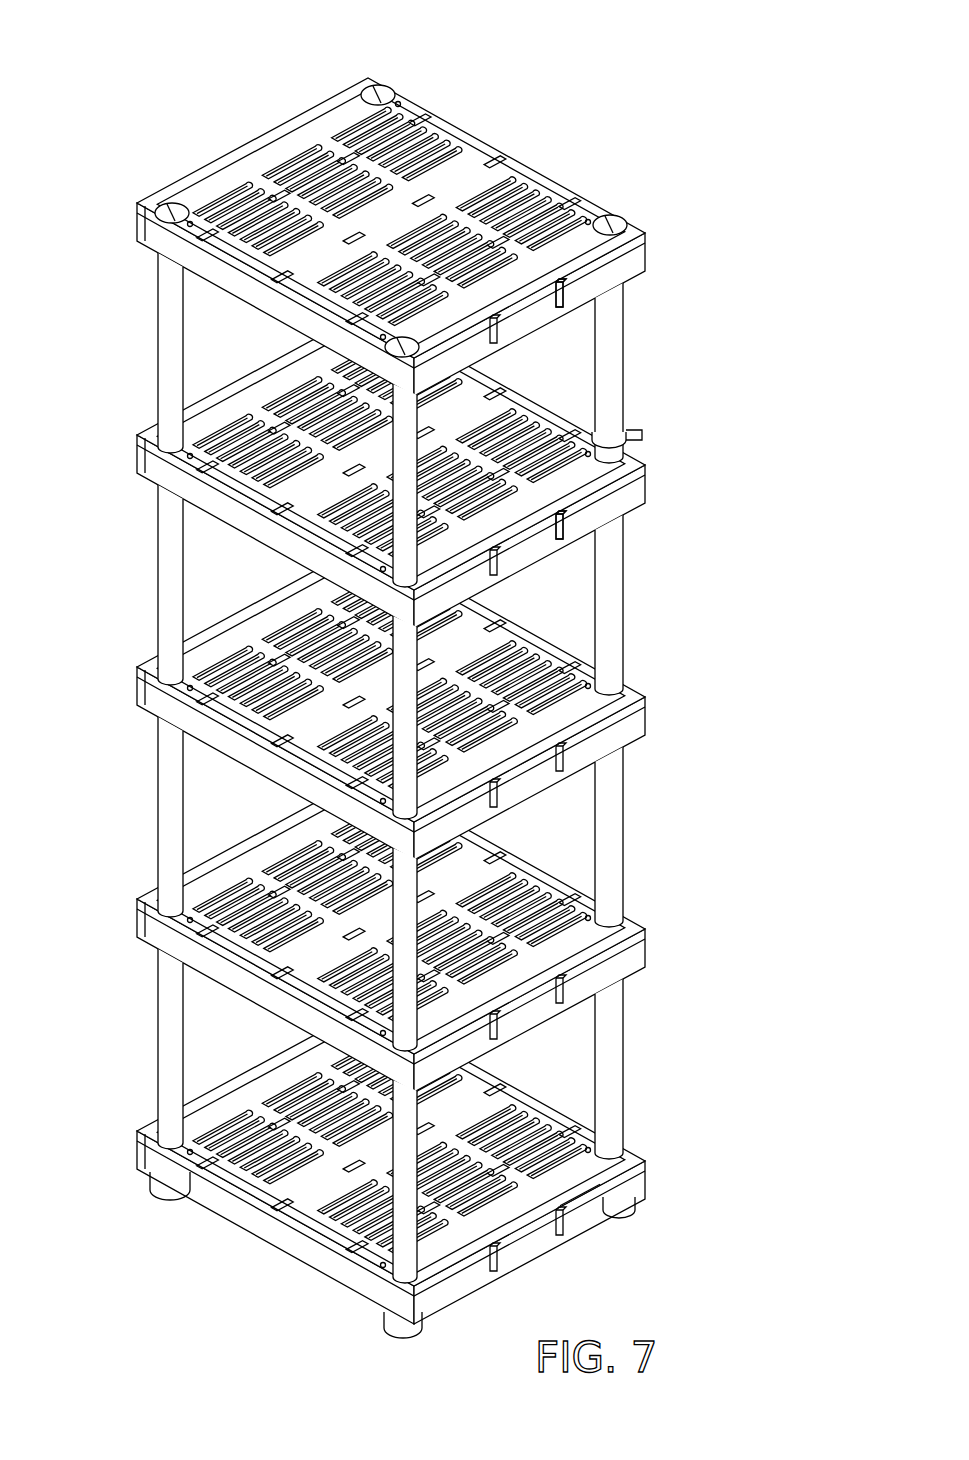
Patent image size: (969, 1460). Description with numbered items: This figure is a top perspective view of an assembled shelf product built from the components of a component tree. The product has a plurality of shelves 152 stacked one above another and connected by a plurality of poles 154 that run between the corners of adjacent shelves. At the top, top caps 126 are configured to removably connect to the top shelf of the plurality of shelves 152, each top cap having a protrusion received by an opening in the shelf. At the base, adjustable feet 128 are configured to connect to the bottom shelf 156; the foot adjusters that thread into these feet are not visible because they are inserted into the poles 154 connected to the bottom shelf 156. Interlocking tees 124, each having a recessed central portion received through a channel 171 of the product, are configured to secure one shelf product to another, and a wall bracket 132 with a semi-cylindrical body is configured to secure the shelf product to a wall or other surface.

The interlocking tee 124 is at (562, 528).
The top cap 126 is at (388, 90).
The adjustable foot 128 is at (630, 1210).
The wall bracket 132 is at (642, 436).
The shelves 152 is at (190, 262).
The poles 154 is at (160, 378).
The bottom shelf 156 is at (578, 1182).
The channel 171 is at (565, 293).